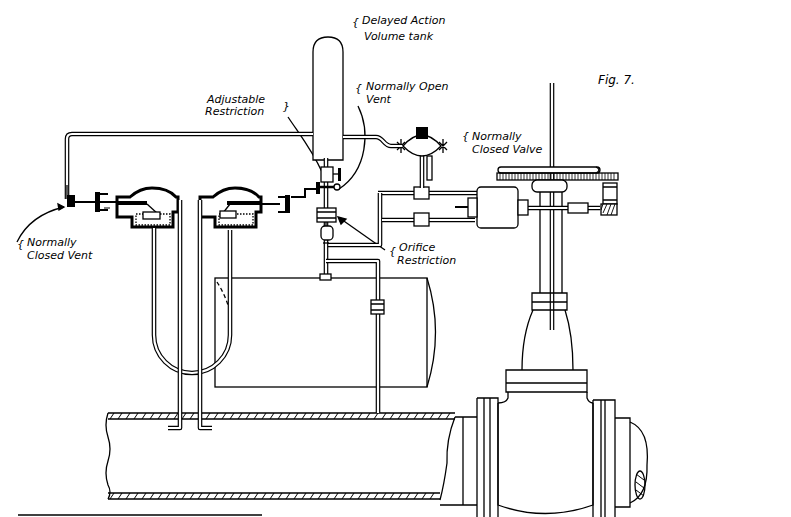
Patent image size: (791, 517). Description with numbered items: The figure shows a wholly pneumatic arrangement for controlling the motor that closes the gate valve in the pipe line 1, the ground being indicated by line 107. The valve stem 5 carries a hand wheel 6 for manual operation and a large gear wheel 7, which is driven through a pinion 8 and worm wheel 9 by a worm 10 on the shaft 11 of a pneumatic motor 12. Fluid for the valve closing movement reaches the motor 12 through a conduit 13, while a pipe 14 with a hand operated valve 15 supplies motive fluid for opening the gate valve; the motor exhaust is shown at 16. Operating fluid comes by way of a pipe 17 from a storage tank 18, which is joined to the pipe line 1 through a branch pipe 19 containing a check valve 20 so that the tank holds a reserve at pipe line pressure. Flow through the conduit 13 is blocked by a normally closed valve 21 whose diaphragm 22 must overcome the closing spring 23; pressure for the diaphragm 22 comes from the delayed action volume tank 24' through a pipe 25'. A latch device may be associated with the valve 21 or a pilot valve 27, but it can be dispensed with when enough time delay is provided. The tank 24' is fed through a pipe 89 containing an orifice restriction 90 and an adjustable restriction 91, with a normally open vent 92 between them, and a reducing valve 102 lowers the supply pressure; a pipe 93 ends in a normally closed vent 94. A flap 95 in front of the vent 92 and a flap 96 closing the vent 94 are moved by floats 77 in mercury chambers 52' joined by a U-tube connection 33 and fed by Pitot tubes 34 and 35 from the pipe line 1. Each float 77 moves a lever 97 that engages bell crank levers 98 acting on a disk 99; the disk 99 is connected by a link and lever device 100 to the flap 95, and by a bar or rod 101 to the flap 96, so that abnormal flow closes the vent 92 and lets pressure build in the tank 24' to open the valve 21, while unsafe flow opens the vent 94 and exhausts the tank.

The pipe line 1 is at (112, 450).
The ground line 107 is at (48, 511).
The stem 5 is at (554, 117).
The hand wheel 6 is at (594, 171).
The gear wheel 7 is at (571, 176).
The pinion 8 is at (618, 177).
The worm wheel 9 is at (612, 214).
The worm 10 is at (617, 205).
The shaft 11 is at (568, 213).
The motor 12 is at (505, 218).
The conduit 13 is at (452, 190).
The pipe 14 is at (464, 223).
The hand operated valve 15 is at (424, 222).
The exhaust 16 is at (455, 207).
The pipe 17 is at (323, 257).
The storage tank 18 is at (437, 365).
The branch pipe 19 is at (378, 402).
The check valve 20 is at (371, 313).
The normally closed valve 21 is at (418, 163).
The diaphragm 22 is at (438, 133).
The valve closing spring 23 is at (426, 124).
The delayed action volume tank 24' is at (306, 98).
The pipe 25' is at (372, 129).
The pilot valve 27 is at (431, 169).
The U-tube connection 33 is at (152, 285).
The Pitot tube 34 is at (168, 326).
The Pitot tube 35 is at (211, 429).
The cup 52' is at (186, 235).
The float 77 is at (158, 207).
The pipe 89 is at (338, 212).
The orifice restriction 90 is at (321, 230).
The adjustable restriction 91 is at (320, 172).
The vent 92 is at (338, 187).
The pipe 93 is at (152, 132).
The vent 94 is at (98, 212).
The flap 95 is at (316, 188).
The flap 96 is at (66, 192).
The lever 97 is at (114, 199).
The bell crank levers 98 is at (97, 192).
The disk 99 is at (107, 211).
The link and lever device 100 is at (298, 192).
The bar or rod 101 is at (67, 202).
The reducing valve 102 is at (321, 240).